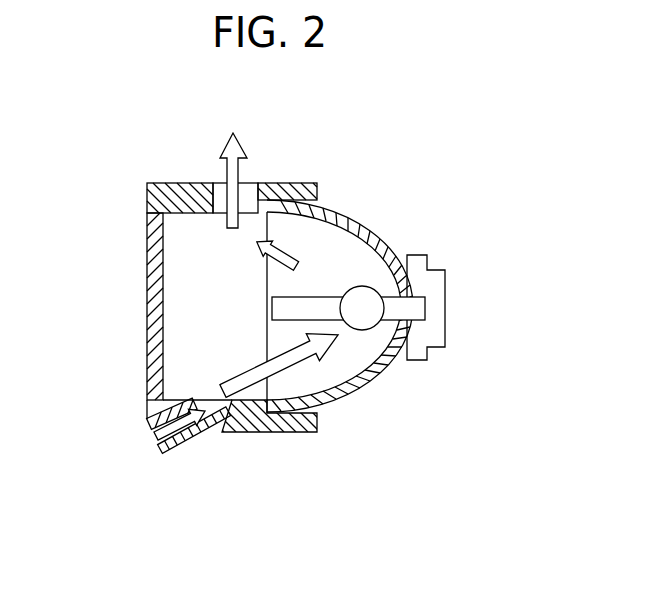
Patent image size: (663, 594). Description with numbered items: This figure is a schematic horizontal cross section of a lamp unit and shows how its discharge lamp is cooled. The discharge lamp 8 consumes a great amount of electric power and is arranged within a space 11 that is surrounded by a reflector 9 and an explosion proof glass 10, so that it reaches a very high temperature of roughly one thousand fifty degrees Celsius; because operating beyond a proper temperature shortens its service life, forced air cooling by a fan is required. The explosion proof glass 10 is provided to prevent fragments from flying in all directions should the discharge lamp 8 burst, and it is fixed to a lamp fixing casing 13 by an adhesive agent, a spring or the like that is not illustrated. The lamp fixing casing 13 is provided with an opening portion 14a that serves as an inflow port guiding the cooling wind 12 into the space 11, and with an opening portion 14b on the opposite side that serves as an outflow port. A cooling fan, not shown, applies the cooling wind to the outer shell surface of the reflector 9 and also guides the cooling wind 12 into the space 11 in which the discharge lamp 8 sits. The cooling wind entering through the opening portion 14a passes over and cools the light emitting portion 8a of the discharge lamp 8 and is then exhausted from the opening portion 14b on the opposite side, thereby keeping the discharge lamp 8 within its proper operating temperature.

The discharge lamp 8 is at (342, 330).
The light emitting portion 8a is at (371, 331).
The reflector 9 is at (375, 230).
The explosion proof glass 10 is at (147, 268).
The space 11 is at (222, 340).
The cooling wind 12 is at (232, 428).
The lamp fixing casing 13 is at (175, 183).
The opening portion 14a is at (157, 449).
The opening portion 14b is at (250, 183).